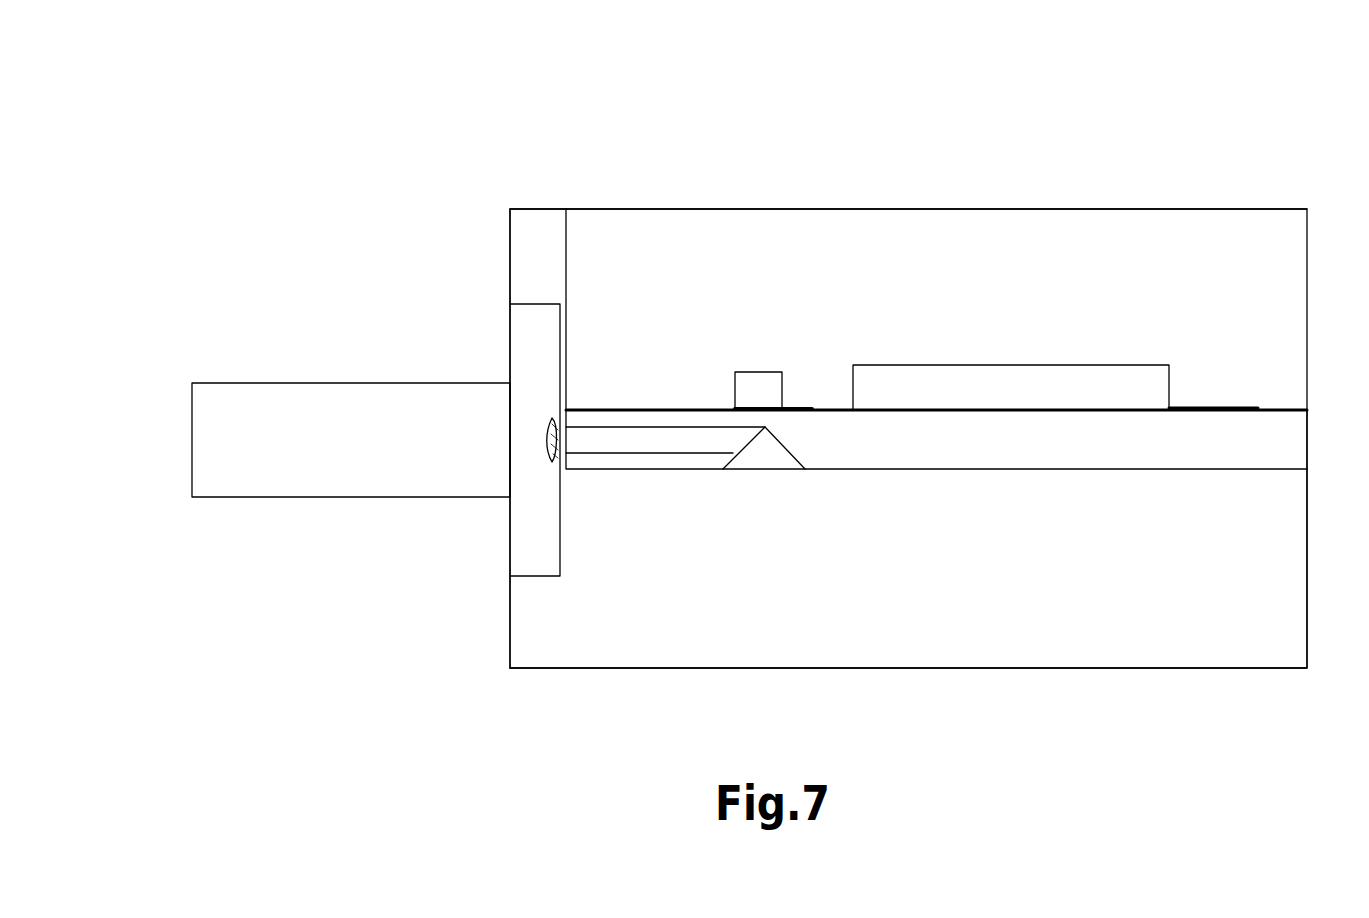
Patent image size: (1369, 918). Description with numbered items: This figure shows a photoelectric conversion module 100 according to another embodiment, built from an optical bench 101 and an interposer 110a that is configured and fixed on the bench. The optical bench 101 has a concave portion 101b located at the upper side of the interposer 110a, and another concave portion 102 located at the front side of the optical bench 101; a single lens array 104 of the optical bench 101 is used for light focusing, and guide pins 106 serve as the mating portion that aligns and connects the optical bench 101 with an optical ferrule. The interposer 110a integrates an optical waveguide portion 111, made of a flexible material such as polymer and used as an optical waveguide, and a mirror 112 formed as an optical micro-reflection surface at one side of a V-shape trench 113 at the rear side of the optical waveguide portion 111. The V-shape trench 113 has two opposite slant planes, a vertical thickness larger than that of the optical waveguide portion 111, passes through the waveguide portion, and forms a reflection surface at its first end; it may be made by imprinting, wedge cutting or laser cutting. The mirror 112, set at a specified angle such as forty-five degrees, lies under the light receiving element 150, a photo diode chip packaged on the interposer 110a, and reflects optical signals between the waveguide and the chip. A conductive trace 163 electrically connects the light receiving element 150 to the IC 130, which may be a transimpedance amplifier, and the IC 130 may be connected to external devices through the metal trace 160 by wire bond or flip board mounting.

The photoelectric conversion module 100 is at (493, 186).
The optical bench 101 is at (1082, 643).
The concave portion 101b is at (1280, 228).
The concave portion 102 is at (523, 522).
The lens array 104 is at (550, 428).
The guide pins 106 is at (320, 402).
The interposer 110a is at (630, 413).
The optical waveguide portion 111 is at (700, 440).
The mirror 112 is at (746, 444).
The V-shape trench 113 is at (762, 461).
The IC 130 is at (978, 380).
The light receiving element 150 is at (762, 382).
The conductive trace 160 is at (1215, 410).
The conductive trace 163 is at (810, 407).